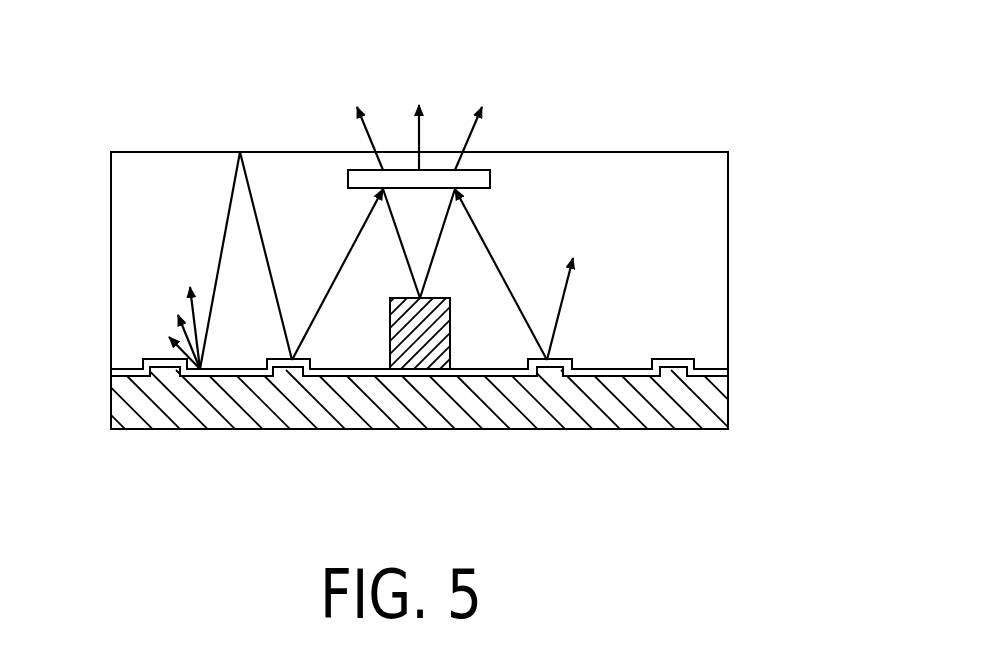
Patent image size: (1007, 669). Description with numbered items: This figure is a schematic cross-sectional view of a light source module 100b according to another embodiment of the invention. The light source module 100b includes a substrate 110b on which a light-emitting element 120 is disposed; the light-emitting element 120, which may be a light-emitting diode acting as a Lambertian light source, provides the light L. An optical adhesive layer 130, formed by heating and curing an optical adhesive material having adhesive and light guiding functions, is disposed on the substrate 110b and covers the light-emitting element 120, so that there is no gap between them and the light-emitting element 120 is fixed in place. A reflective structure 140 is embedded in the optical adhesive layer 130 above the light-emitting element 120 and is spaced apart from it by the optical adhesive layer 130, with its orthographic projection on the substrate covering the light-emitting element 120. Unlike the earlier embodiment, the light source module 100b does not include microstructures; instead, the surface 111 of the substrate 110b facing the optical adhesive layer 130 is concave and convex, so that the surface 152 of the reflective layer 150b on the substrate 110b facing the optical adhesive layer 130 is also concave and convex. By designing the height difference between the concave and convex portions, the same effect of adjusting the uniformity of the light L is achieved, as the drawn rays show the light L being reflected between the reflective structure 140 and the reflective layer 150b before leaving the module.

The light source module 100b is at (93, 61).
The substrate 110b is at (705, 403).
The surface 111 is at (677, 365).
The light-emitting element 120 is at (417, 340).
The optical adhesive layer 130 is at (703, 172).
The reflective structure 140 is at (478, 178).
The reflective layer 150b is at (712, 375).
The surface 152 is at (157, 357).
The light L is at (478, 132).